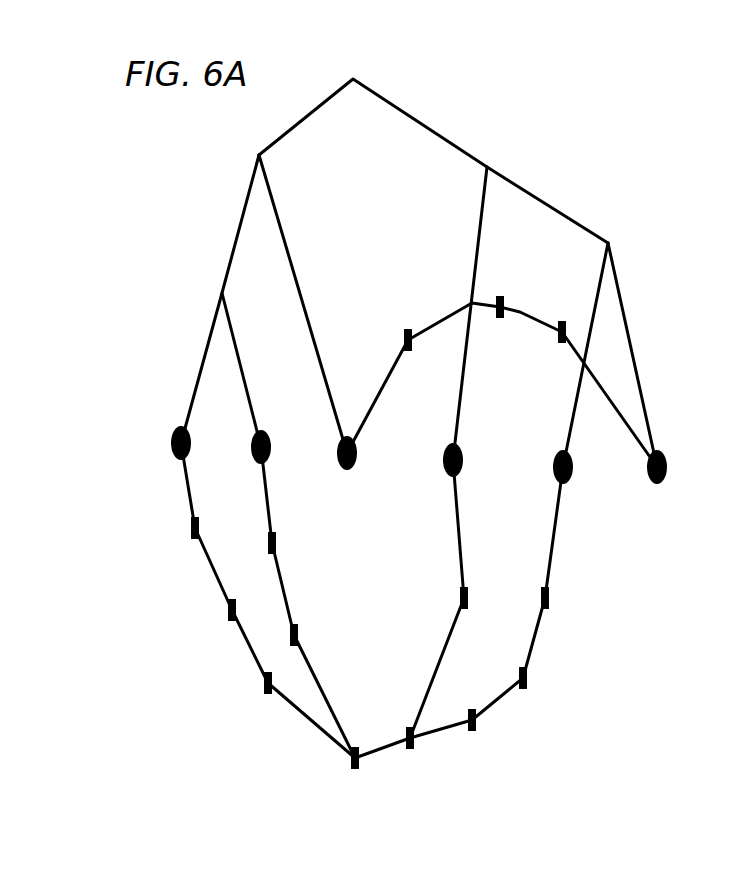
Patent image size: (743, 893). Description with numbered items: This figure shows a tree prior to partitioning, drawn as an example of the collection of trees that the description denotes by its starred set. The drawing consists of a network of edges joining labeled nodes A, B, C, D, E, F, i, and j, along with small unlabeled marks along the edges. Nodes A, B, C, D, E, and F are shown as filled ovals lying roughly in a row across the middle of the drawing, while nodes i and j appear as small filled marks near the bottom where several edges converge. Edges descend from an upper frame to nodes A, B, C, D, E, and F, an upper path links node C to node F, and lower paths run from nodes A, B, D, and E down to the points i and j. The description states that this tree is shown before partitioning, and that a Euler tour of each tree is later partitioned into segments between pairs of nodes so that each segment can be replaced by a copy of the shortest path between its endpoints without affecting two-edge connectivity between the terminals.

The node A is at (191, 443).
The node B is at (271, 447).
The node C is at (358, 453).
The node D is at (464, 460).
The node E is at (572, 467).
The node F is at (666, 467).
The junction point i is at (355, 773).
The junction point j is at (409, 755).